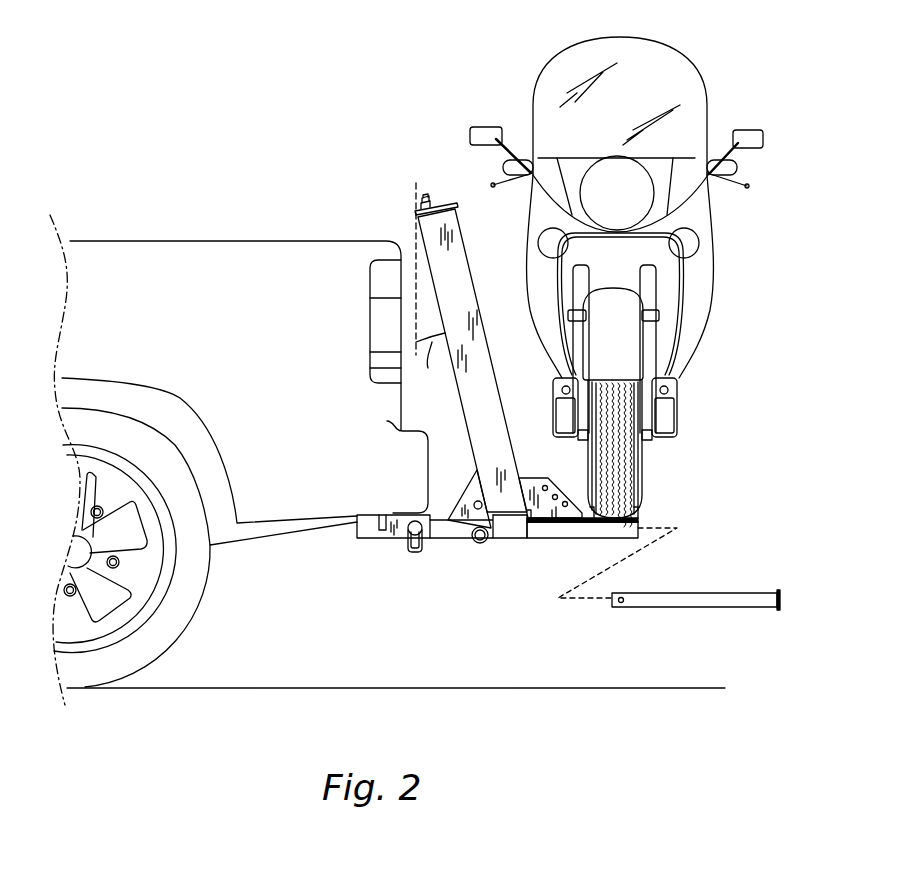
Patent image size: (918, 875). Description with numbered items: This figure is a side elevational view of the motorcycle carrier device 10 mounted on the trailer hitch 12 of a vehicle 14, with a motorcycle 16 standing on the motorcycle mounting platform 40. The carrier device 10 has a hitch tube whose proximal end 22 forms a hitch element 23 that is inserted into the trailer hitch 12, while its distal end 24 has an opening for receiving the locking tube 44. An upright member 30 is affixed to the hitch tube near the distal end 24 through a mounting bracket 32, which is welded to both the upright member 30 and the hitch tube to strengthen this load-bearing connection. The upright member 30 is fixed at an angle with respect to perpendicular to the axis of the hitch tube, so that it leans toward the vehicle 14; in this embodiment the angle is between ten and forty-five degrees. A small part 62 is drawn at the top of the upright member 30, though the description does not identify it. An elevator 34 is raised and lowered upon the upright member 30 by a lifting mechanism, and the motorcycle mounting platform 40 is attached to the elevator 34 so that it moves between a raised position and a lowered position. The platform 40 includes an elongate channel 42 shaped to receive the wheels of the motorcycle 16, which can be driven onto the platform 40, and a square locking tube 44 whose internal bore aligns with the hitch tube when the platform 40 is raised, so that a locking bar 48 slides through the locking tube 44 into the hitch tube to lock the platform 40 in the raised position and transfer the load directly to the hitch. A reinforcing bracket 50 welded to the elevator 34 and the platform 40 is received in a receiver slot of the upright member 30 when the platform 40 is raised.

The motorcycle carrier device 10 is at (400, 130).
The trailer hitch 12 is at (396, 538).
The vehicle 14 is at (282, 530).
The motorcycle 16 is at (700, 295).
The proximal end 22 is at (453, 540).
The hitch element 23 is at (438, 543).
The distal end 24 is at (489, 545).
The upright member 30 is at (455, 252).
The mounting bracket 32 is at (462, 497).
The elevator 34 is at (509, 530).
The motorcycle mounting platform 40 is at (556, 546).
The elongate channel 42 is at (636, 512).
The locking tube 44 is at (606, 531).
The locking bar 48 is at (653, 600).
The reinforcing bracket 50 is at (540, 478).
The end cap 62 is at (427, 194).